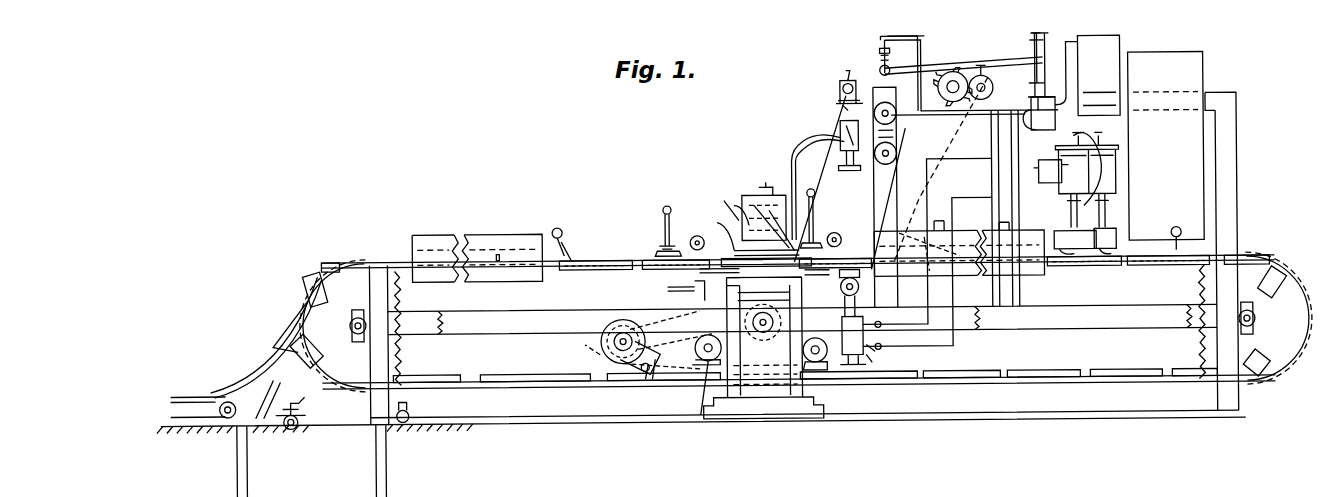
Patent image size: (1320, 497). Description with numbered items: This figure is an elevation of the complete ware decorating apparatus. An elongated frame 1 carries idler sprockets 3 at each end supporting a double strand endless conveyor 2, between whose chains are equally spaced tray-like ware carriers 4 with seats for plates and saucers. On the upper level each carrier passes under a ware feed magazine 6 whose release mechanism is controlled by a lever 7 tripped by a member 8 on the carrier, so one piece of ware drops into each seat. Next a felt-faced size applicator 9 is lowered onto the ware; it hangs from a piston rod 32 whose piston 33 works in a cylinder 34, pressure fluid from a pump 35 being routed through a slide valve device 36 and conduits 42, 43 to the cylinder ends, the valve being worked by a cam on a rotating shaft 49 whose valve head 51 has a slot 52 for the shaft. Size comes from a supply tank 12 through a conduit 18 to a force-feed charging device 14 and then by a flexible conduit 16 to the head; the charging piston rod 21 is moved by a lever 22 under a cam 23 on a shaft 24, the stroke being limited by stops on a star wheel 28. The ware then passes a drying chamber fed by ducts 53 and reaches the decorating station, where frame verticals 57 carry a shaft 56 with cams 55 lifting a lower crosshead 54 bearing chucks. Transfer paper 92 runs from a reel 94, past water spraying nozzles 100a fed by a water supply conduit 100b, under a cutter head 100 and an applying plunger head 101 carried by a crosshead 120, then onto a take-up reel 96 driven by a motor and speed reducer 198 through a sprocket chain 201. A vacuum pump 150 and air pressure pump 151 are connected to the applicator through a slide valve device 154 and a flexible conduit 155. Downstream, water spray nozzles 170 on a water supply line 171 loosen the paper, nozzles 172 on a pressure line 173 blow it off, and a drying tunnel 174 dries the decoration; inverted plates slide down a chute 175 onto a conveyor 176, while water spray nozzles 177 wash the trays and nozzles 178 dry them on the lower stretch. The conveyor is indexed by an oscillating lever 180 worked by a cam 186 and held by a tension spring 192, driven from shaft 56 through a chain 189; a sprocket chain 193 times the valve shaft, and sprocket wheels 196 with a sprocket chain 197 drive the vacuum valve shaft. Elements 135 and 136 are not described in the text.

The elongated frame 1 is at (491, 326).
The double strand endless conveyor 2 is at (320, 266).
The idler sprockets 3 is at (425, 331).
The ware carriers 4 is at (325, 262).
The ware feed magazine 6 is at (1190, 154).
The lever 7 is at (1169, 227).
The member 8 is at (606, 259).
The size applicator 9 is at (1110, 223).
The supply tank 12 is at (1122, 51).
The force-feed charging and measuring device 14 is at (1037, 92).
The flexible conduit 16 is at (1120, 178).
The conduit 18 is at (1060, 117).
The piston rod 21 is at (1045, 77).
The lever 22 is at (935, 67).
The cam 23 is at (988, 78).
The shaft 24 is at (975, 101).
The four-pointed star wheel 28 is at (940, 83).
The piston rod 32 is at (1110, 198).
The piston 33 is at (1051, 171).
The cylinder 34 is at (1118, 156).
The pump 35 is at (818, 362).
The slide valve device 36 is at (878, 357).
The conduit 42 is at (953, 286).
The conduit 43 is at (953, 299).
The shaft 49 is at (842, 290).
The head 51 is at (752, 300).
The longitudinal slot 52 is at (968, 244).
The ducts 53 is at (945, 224).
The lower crosshead 54 is at (818, 271).
The cams 55 is at (762, 251).
The shaft 56 is at (765, 337).
The frame verticals 57 is at (773, 405).
The transfer paper 92 is at (715, 227).
The reel 94 is at (843, 230).
The reel 96 is at (697, 235).
The cutter head 100 is at (740, 248).
The water spraying nozzles 100a is at (818, 225).
The water supply conduit 100b is at (818, 194).
The applying plunger head 101 is at (728, 202).
The crosshead 120 is at (758, 193).
The pipes 135 is at (993, 166).
The pulley 136 is at (773, 322).
The vacuum pump 150 is at (898, 119).
The air pressure pump 151 is at (904, 147).
The slide valve device 154 is at (807, 182).
The flexible conduit 155 is at (793, 152).
The water spray nozzles 170 is at (662, 248).
The water supply line 171 is at (668, 205).
The nozzles 172 is at (568, 240).
The pressure line 173 is at (555, 226).
The drying tunnel 174 is at (495, 232).
The chute 175 is at (270, 368).
The conveyor 176 is at (190, 392).
The water spray nozzles 177 is at (292, 405).
The nozzles 178 is at (410, 409).
The oscillating lever 180 is at (668, 290).
The cam 186 is at (640, 363).
The chain 189 is at (645, 370).
The tension spring 192 is at (600, 343).
The sprocket chain 193 is at (700, 359).
The sprocket wheels 196 is at (845, 106).
The sprocket chain 197 is at (842, 126).
The combination motor and adjustable speed reducer 198 is at (700, 414).
The sprocket chain 201 is at (700, 270).